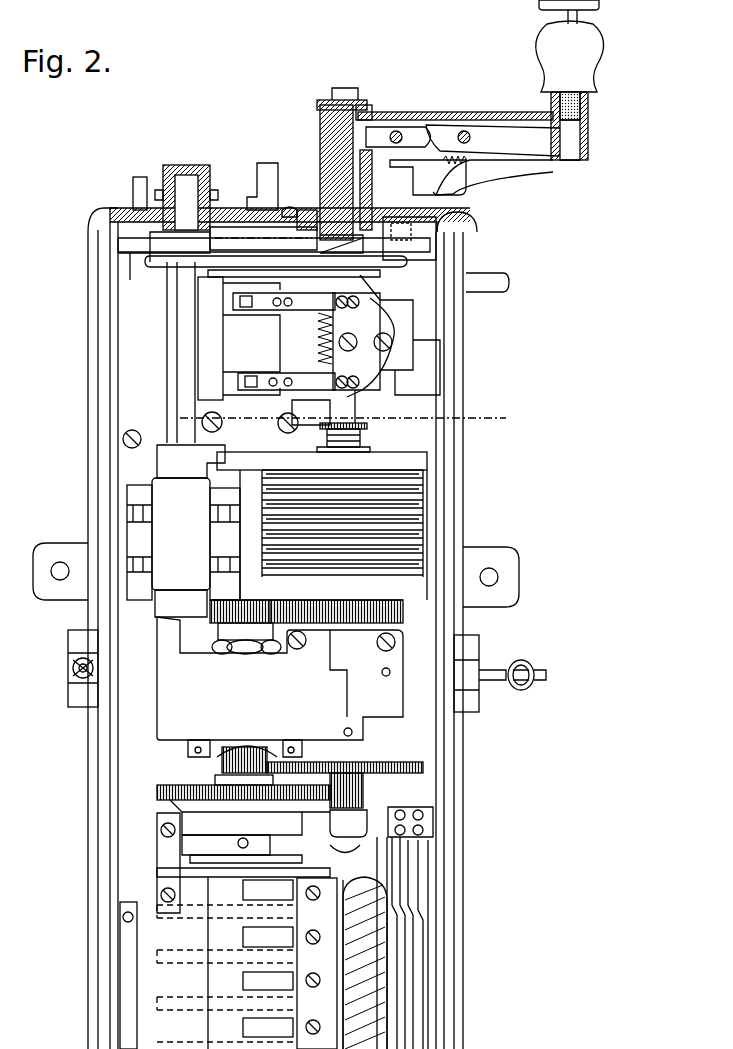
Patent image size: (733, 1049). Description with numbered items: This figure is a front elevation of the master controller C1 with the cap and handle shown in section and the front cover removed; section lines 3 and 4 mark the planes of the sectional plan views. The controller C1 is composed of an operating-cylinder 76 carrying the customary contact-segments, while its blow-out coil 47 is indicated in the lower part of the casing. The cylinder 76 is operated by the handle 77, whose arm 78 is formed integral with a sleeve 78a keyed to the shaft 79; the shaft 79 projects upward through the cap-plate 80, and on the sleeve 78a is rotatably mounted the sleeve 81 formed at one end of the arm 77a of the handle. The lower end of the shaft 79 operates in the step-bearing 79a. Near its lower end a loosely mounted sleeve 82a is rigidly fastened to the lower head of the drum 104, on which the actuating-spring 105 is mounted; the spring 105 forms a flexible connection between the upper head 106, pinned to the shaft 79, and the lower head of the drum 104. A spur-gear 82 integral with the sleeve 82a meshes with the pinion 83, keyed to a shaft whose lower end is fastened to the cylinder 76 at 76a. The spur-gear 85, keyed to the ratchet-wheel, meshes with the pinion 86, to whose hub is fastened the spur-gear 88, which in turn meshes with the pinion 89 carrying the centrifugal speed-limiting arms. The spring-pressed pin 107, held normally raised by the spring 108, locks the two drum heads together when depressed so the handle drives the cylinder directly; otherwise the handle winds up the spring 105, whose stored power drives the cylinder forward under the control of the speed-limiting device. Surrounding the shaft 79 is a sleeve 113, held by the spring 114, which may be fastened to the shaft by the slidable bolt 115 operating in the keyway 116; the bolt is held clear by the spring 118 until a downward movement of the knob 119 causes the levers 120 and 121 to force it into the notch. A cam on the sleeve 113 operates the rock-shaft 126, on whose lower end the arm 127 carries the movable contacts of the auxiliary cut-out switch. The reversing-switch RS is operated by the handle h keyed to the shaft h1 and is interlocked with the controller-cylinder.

The section line 3 is at (120, 246).
The section line 4 is at (153, 442).
The blow-out coil 47 is at (367, 963).
The operating-cylinder 76 is at (165, 935).
The fastening point of shaft to operating-cylinder 76a is at (238, 843).
The handle 77 is at (416, 110).
The arm of controller-handle 77a is at (484, 112).
The arm of handle 78 is at (453, 188).
The sleeve 78a is at (313, 180).
The shaft 79 is at (348, 407).
The step-bearing 79a is at (393, 652).
The cap-plate 80 is at (469, 220).
The sleeve 81 is at (318, 127).
The spur-gear 82 is at (386, 610).
The sleeve 82a is at (325, 588).
The pinion 83 is at (223, 610).
The spur-gear 85 is at (153, 778).
The pinion 86 is at (357, 790).
The spur-gear 88 is at (428, 768).
The pinion 89 is at (220, 765).
The drum 104 is at (389, 517).
The spring 105 is at (423, 507).
The upper head 106 is at (413, 462).
The spring-pressed pin 107 is at (376, 430).
The spring 108 is at (379, 447).
The sleeve 113 is at (423, 308).
The spring 114 is at (424, 363).
The slidable bolt 115 is at (374, 163).
The keyway 116 is at (379, 110).
The spring 118 is at (476, 167).
The knob 119 is at (600, 0).
The lever 120 is at (539, 133).
The toothed rocker-lever 121 is at (438, 107).
The rock-shaft 126 is at (416, 302).
The arm 127 is at (433, 350).
The handle h is at (162, 170).
The shaft h1 is at (177, 340).
The reversing-switch RS is at (183, 531).
The controller C1 is at (386, 535).